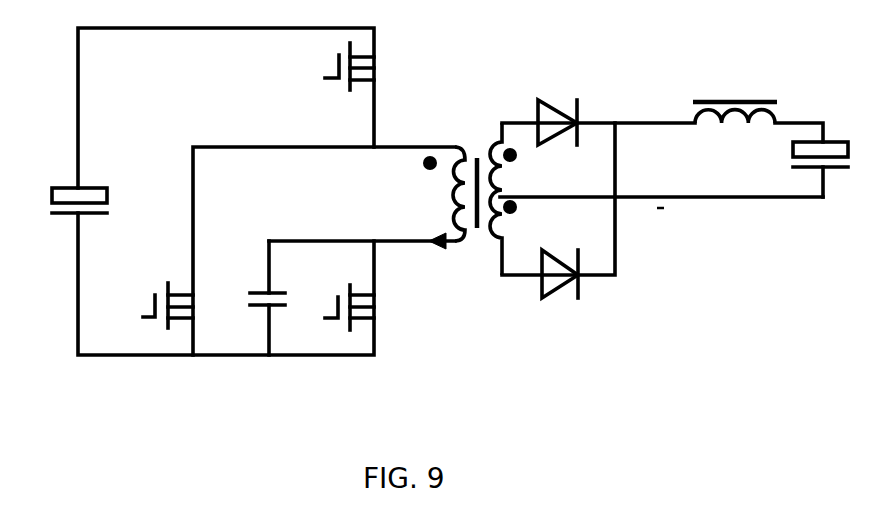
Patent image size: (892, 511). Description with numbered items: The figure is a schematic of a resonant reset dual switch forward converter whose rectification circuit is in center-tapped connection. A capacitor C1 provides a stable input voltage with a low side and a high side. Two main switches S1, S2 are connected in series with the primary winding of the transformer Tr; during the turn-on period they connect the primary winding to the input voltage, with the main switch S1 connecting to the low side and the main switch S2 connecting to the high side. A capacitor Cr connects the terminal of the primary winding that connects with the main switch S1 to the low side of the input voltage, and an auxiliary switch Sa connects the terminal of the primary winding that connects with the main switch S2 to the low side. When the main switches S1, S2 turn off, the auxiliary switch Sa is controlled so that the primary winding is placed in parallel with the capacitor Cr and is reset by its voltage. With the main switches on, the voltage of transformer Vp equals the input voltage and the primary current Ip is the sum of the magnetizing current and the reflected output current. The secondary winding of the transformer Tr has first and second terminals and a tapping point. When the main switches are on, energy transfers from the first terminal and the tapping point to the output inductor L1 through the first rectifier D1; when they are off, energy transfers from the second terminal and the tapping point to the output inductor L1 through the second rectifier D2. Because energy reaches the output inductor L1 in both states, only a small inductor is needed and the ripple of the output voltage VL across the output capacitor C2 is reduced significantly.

The capacitor C1 is at (64, 219).
The main switch S2 is at (343, 85).
The auxiliary switch Sa is at (165, 292).
The capacitor Cr is at (256, 298).
The main switch S1 is at (339, 293).
The transformer Tr is at (470, 189).
The voltage of transformer Vp is at (405, 180).
The primary current Ip is at (440, 258).
The first rectifier D1 is at (555, 101).
The second rectifier D2 is at (558, 296).
The output inductor L1 is at (735, 96).
The output capacitor C2 is at (820, 191).
The output voltage VL is at (672, 165).